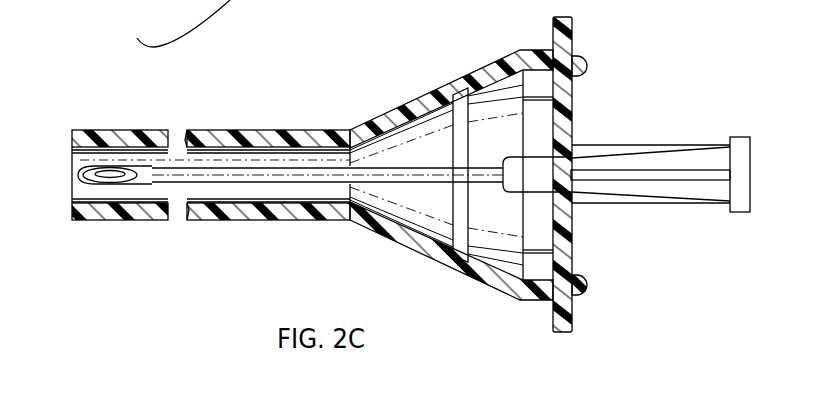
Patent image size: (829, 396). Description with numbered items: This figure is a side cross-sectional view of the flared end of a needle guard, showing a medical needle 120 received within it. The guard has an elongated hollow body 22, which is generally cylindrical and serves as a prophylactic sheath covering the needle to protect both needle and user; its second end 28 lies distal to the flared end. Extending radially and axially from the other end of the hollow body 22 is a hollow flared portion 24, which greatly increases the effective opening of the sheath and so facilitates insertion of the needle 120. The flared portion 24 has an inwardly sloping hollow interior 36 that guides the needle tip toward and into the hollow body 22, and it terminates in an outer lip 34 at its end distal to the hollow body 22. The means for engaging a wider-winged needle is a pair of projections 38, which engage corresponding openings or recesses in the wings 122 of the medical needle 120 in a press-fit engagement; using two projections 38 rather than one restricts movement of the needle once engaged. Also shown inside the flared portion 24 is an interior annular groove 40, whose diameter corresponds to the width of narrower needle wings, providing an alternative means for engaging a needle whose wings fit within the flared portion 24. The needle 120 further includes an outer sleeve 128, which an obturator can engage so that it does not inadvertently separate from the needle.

The elongated hollow body 22 is at (262, 220).
The hollow flared portion 24 is at (407, 252).
The second end 28 is at (73, 168).
The outer lip 34 is at (553, 48).
The hollow interior 36 is at (495, 118).
The projections 38 is at (574, 68).
The interior annular groove 40 is at (465, 253).
The medical needle 120 is at (207, 183).
The wings 122 is at (574, 120).
The outer sleeve 128 is at (673, 158).